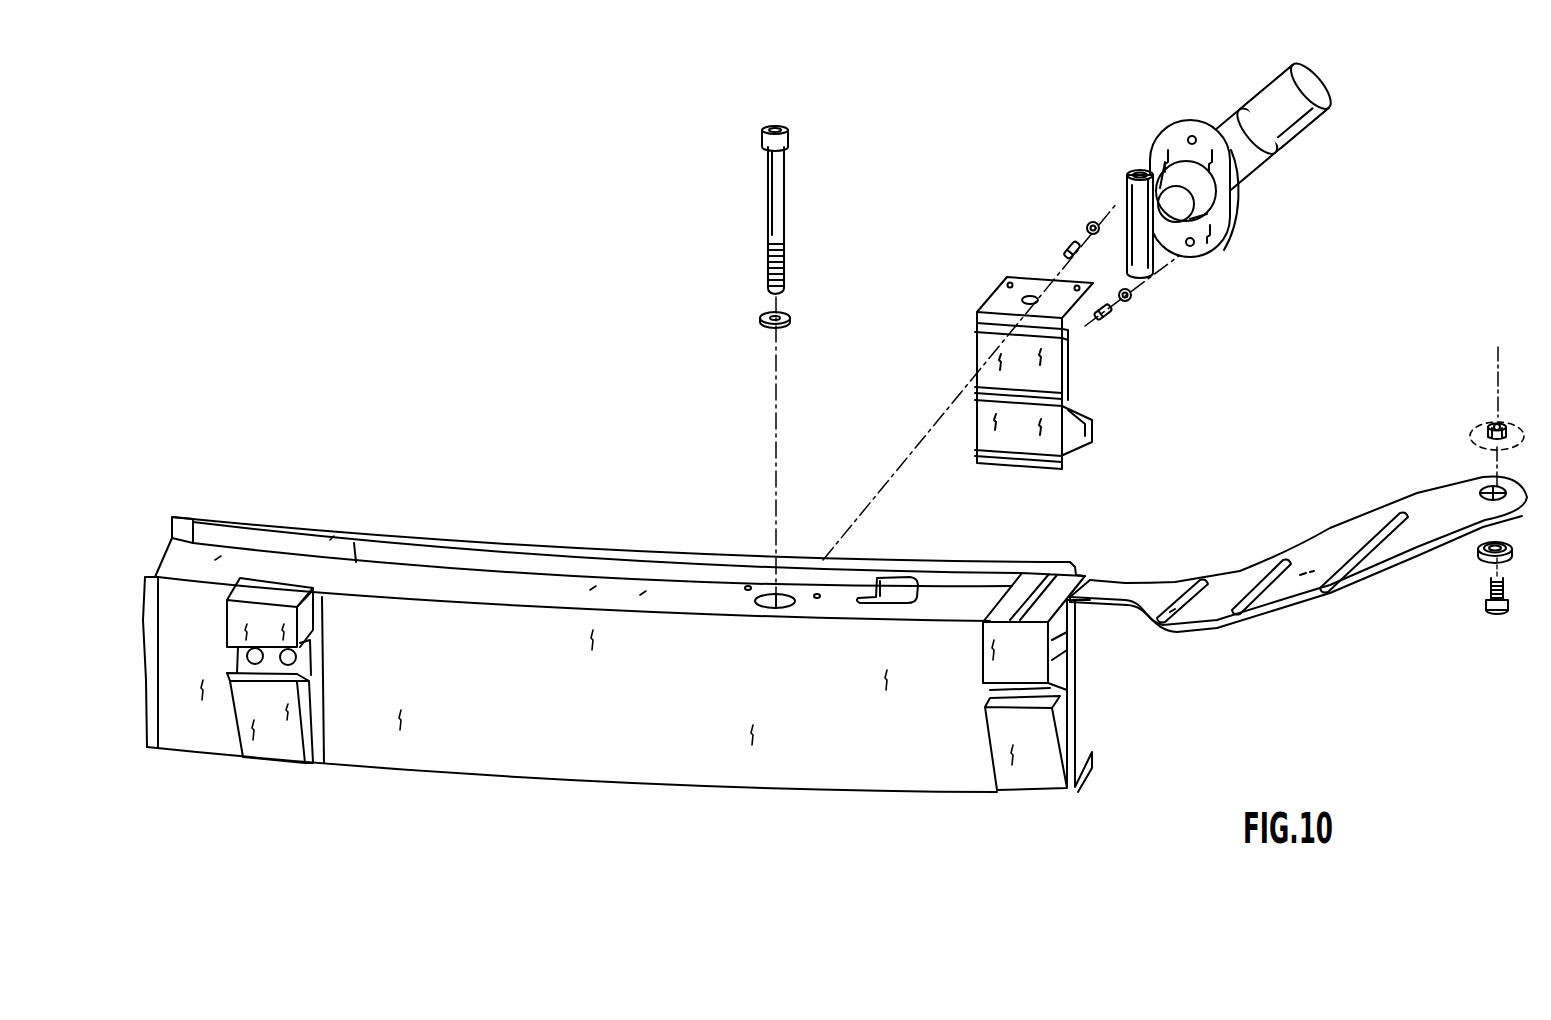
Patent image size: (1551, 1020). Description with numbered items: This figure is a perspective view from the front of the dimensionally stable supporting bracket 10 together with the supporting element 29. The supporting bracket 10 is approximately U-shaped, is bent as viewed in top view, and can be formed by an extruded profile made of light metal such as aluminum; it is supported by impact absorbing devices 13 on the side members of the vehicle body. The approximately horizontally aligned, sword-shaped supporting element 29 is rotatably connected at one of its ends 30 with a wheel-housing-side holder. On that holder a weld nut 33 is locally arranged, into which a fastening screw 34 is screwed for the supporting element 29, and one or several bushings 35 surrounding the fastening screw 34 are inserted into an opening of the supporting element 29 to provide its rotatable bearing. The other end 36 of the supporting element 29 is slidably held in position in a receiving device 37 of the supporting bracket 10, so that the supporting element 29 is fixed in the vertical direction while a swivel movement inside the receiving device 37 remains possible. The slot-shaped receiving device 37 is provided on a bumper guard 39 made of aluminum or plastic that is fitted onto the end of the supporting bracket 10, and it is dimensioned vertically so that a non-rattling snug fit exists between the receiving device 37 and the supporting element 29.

The dimensionally stable supporting bracket 10 is at (563, 548).
The impact absorbing device 13 is at (1225, 250).
The supporting element 29 is at (1238, 577).
The end of supporting element 30 is at (1508, 478).
The weld nut 33 is at (1493, 420).
The fastening screw 34 is at (1483, 593).
The bushing 35 is at (1478, 556).
The other end of supporting element 36 is at (1087, 607).
The receiving device 37 is at (1097, 580).
The bumper guard 39 is at (984, 712).